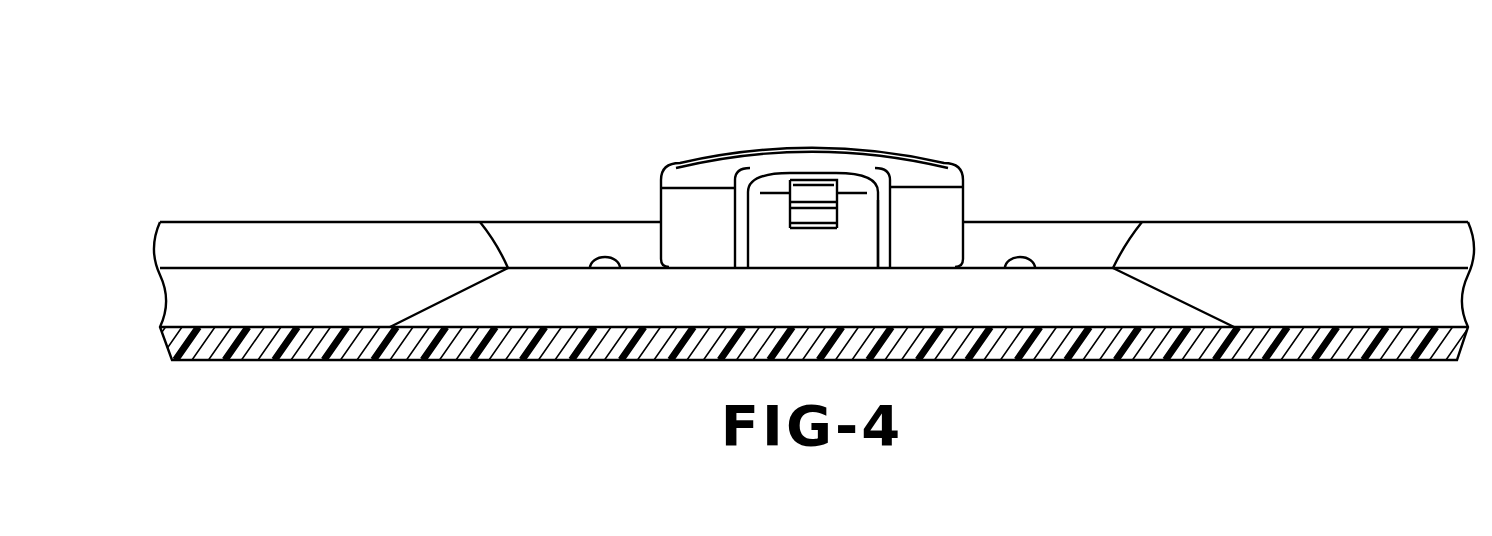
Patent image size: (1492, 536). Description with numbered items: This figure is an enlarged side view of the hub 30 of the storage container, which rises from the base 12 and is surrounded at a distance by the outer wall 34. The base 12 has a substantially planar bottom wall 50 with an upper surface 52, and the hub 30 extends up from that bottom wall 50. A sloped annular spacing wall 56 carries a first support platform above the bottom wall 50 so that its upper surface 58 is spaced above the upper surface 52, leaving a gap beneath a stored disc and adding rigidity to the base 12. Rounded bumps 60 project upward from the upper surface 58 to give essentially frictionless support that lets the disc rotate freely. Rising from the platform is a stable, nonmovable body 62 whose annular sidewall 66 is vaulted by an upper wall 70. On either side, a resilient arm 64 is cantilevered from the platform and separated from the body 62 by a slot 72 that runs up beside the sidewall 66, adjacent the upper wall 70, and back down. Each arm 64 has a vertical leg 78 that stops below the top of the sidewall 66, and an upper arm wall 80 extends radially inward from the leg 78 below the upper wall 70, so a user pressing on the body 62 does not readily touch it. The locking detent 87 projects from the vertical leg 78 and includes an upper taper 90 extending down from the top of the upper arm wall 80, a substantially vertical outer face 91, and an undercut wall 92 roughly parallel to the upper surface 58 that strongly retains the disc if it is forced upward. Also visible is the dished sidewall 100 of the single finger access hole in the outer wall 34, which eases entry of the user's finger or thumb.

The base 12 is at (352, 370).
The hub 30 is at (903, 80).
The outer wall 34 is at (251, 225).
The bottom wall 50 is at (1280, 348).
The upper surface 52 is at (1343, 325).
The annular spacing wall 56 is at (447, 297).
The upper surface 58 is at (547, 267).
The bumps 60 is at (606, 256).
The body 62 is at (722, 142).
The resilient arms 64 is at (860, 173).
The sidewall 66 is at (691, 237).
The upper wall 70 is at (707, 155).
The slot 72 is at (775, 163).
The vertical leg 78 is at (856, 247).
The upper arm wall 80 is at (802, 178).
The locking detent 87 is at (800, 240).
The upper taper 90 is at (817, 193).
The vertical outer face 91 is at (790, 215).
The undercut wall 92 is at (820, 226).
The sidewall 100 is at (1103, 243).